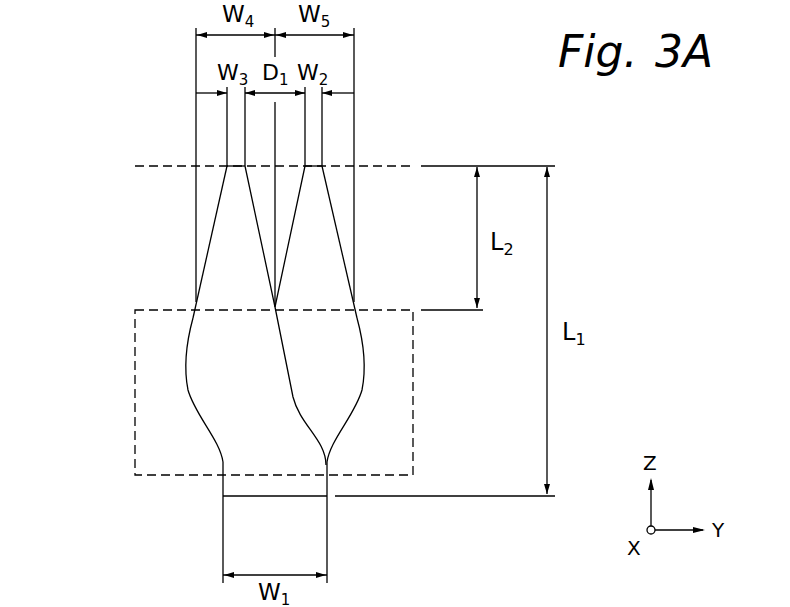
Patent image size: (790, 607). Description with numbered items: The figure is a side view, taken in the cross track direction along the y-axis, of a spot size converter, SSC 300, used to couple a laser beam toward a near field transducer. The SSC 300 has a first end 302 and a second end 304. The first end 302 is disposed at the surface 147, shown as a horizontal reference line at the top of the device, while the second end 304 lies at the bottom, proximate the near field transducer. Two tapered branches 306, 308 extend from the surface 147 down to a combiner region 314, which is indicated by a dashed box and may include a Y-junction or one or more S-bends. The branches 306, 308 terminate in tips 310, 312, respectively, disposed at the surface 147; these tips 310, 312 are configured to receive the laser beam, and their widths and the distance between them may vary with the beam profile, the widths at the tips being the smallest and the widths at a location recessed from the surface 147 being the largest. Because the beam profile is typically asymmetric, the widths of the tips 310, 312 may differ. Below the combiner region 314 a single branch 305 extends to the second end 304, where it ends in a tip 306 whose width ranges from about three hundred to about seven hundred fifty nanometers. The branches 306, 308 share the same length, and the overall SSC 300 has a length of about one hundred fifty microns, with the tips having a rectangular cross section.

The surface 147 is at (435, 143).
The spot size converter (SSC) 300 is at (98, 233).
The first end 302 is at (167, 100).
The second end 304 is at (295, 510).
The single branch 305 is at (223, 482).
The branch / tip 306 is at (333, 215).
The branch 308 is at (218, 215).
The tip 310 is at (313, 165).
The tip 312 is at (237, 165).
The combiner region 314 is at (135, 385).